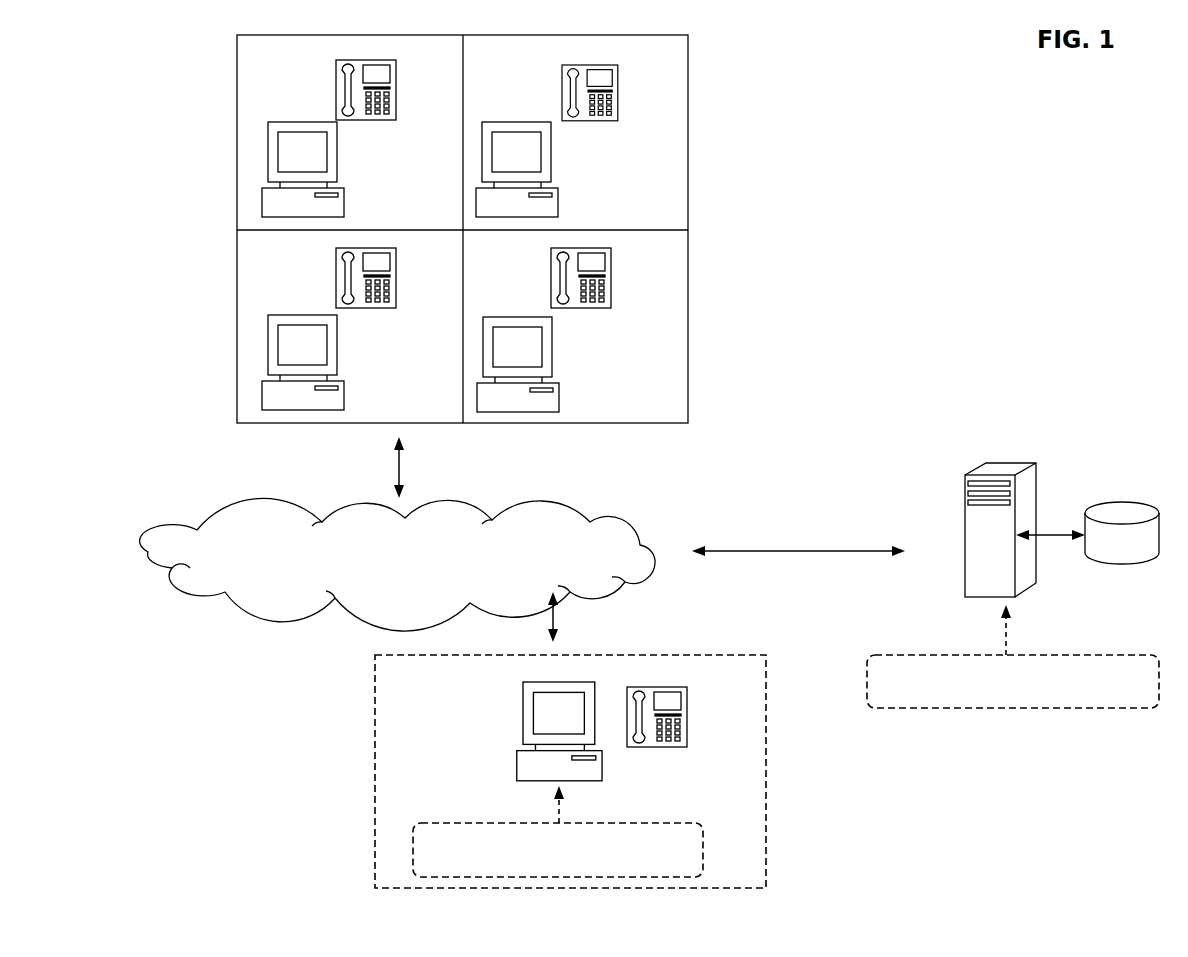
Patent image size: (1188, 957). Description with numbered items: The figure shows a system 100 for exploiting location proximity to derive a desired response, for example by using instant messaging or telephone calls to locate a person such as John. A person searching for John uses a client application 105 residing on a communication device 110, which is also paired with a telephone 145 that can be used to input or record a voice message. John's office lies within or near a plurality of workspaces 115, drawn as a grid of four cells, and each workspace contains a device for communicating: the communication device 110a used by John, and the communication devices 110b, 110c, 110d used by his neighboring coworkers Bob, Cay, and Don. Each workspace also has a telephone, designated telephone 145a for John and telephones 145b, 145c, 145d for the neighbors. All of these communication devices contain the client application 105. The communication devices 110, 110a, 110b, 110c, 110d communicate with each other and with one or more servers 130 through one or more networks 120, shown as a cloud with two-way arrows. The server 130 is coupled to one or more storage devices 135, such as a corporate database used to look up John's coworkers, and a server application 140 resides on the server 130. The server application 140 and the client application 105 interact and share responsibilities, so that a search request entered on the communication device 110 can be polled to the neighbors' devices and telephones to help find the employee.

The system 100 is at (889, 121).
The client application 105 is at (681, 863).
The communication device 110 is at (515, 772).
The communication device 110a is at (337, 150).
The communication device 110b is at (552, 152).
The communication device 110c is at (337, 345).
The communication device 110d is at (552, 347).
The workspaces 115 is at (462, 262).
The network 120 is at (267, 561).
The server 130 is at (965, 533).
The storage device 135 is at (1122, 564).
The server application 140 is at (1139, 697).
The telephone 145 is at (687, 717).
The telephone 145a is at (396, 90).
The telephone 145b is at (618, 90).
The telephone 145c is at (396, 280).
The telephone 145d is at (611, 275).